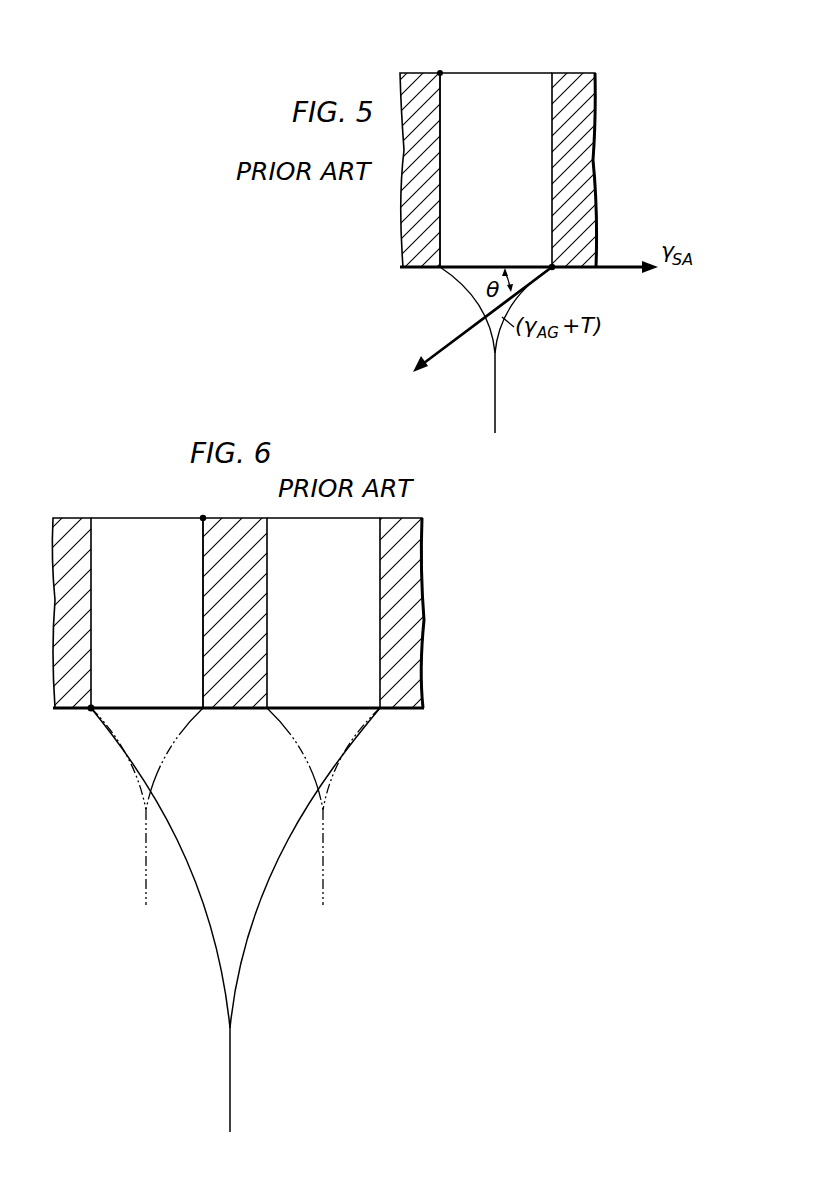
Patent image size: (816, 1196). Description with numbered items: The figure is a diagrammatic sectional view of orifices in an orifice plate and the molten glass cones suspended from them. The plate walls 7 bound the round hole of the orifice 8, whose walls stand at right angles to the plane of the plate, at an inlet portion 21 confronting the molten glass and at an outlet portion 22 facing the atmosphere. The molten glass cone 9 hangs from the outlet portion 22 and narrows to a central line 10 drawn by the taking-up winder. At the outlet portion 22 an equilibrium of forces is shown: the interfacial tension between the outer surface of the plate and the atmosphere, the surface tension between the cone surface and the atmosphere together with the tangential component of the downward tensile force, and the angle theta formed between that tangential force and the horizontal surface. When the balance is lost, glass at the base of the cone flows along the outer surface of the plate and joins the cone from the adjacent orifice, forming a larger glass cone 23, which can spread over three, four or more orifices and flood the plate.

In FIG. 5, the wall of capillary slot (substrate) 7 is at (597, 107).
In FIG. 6, the wall of capillary slot (substrate) 7 is at (80, 518).
In FIG. 5, the capillary slot / channel 8 is at (521, 88).
In FIG. 6, the capillary slot / channel 8 is at (145, 535).
In FIG. 5, the liquid meniscus surface 9 is at (456, 283).
In FIG. 5, the center line of meniscus 10 is at (494, 410).
In FIG. 5, the inlet portion 21 is at (441, 72).
In FIG. 6, the inlet portion 21 is at (203, 517).
In FIG. 5, the outlet portion 22 is at (553, 270).
In FIG. 6, the outlet portion 22 is at (91, 710).
In FIG. 6, the larger glass cone 23 is at (208, 895).